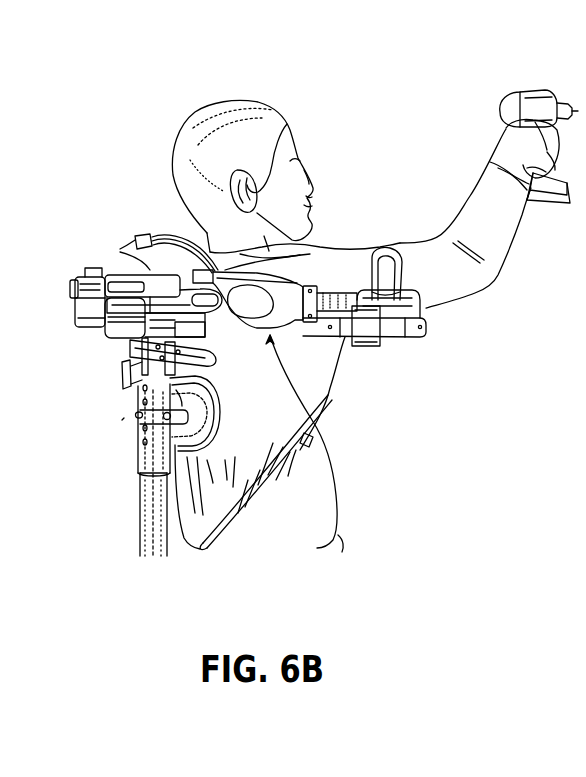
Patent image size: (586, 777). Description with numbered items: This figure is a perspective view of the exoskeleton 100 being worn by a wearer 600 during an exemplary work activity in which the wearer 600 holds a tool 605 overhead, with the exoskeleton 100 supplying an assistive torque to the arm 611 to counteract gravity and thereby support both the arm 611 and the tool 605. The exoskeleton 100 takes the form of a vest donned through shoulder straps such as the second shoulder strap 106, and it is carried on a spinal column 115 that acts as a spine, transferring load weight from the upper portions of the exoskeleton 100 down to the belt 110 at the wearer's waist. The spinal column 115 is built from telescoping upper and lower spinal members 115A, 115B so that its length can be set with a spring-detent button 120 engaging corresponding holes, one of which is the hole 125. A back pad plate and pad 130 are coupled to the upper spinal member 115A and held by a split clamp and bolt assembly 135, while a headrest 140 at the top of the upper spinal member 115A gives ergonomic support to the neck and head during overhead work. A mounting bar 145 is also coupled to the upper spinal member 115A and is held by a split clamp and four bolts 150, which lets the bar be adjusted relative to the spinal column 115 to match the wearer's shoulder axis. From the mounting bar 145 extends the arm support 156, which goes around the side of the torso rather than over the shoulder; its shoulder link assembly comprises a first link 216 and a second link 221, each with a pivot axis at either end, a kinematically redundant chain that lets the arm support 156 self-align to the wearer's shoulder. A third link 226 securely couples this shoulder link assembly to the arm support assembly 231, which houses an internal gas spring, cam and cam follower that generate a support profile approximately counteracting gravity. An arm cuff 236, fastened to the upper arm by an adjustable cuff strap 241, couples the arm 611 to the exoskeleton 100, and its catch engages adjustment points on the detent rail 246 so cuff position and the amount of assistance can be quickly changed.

The wearer 600 is at (198, 131).
The tool 605 is at (533, 98).
The arm 611 is at (457, 287).
The exoskeleton 100 is at (118, 418).
The second shoulder strap 106 is at (327, 397).
The belt 110 is at (172, 516).
The spinal column 115 is at (148, 513).
The upper spinal member 115A is at (148, 458).
The lower spinal member 115B is at (148, 543).
The spring-detent button 120 is at (140, 440).
The hole 125 is at (138, 425).
The back pad plate and pad 130 is at (138, 387).
The split clamp and bolt assembly 135 is at (177, 414).
The headrest 140 is at (136, 238).
The mounting bar 145 is at (210, 362).
The split clamp and four bolts 150 is at (127, 347).
The arm support 156 is at (293, 278).
The first link 216 is at (158, 327).
The second link 221 is at (145, 287).
The third link 226 is at (258, 294).
The arm support assembly 231 is at (327, 428).
The arm cuff 236 is at (407, 303).
The adjustable cuff strap 241 is at (390, 263).
The detent rail 246 is at (325, 337).